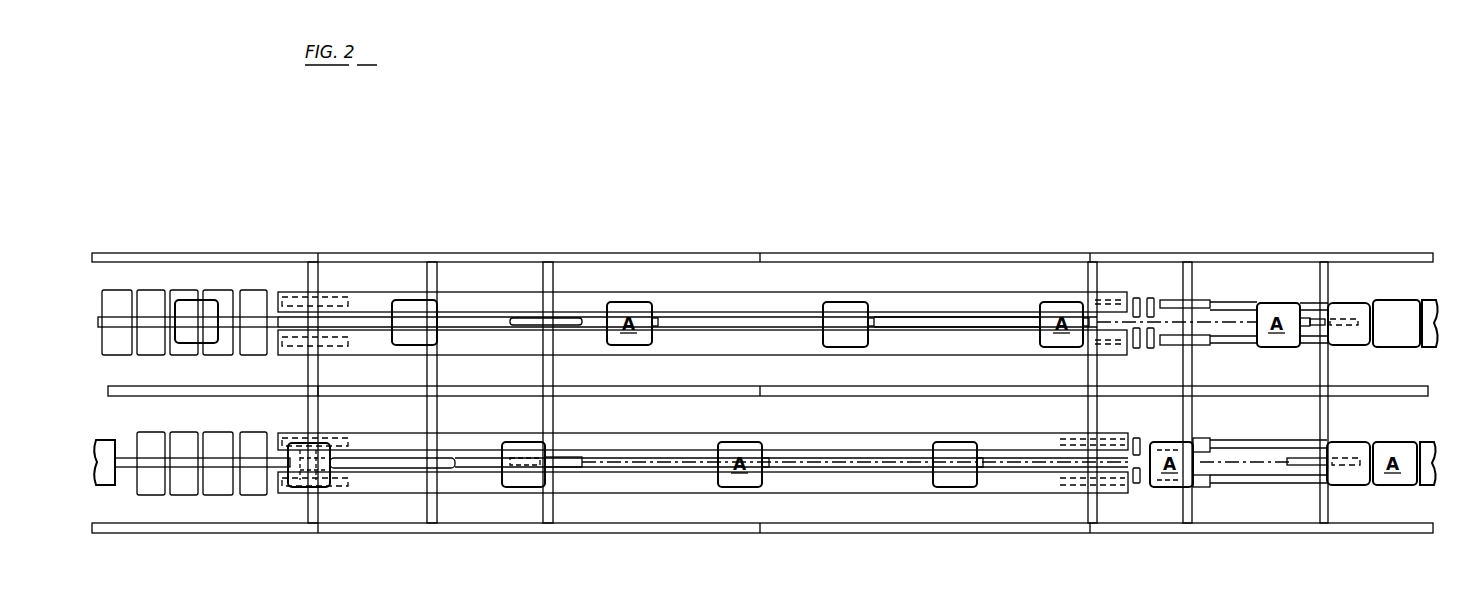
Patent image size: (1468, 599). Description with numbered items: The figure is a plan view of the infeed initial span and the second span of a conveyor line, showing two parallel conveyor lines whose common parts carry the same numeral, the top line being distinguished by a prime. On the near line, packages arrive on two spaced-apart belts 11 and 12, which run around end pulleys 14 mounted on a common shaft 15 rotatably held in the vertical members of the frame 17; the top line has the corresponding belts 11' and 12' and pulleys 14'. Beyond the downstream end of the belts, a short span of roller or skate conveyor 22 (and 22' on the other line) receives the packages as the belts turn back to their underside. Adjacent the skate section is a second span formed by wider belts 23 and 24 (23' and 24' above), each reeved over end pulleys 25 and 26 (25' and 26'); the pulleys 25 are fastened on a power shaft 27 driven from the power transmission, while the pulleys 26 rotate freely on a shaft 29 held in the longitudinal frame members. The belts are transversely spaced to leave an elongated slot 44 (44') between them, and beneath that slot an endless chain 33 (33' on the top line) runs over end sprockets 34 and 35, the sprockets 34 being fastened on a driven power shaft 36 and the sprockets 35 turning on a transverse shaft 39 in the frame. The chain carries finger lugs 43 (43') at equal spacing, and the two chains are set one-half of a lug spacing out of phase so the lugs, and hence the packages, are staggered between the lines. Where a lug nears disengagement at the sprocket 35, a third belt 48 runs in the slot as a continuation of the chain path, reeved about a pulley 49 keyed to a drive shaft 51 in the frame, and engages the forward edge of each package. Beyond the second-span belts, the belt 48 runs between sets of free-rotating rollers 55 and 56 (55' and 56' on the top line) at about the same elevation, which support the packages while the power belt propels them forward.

The belt 11 is at (1263, 438).
The belt 11' is at (1304, 297).
The belt 12 is at (1268, 487).
The belt 12' is at (1319, 346).
The end pulleys 14 is at (1211, 463).
The end pulleys 14' is at (1208, 322).
The common shaft 15 is at (1183, 414).
The frame 17 is at (965, 388).
The roller or skate conveyor 22 is at (1141, 463).
The roller or skate conveyor 22' is at (1155, 325).
The belt 23 is at (703, 428).
The belt 23' is at (702, 287).
The belt 24 is at (703, 496).
The belt 24' is at (702, 356).
The end pulleys 25 is at (1081, 463).
The end pulleys 25' is at (1118, 282).
The end pulleys 26 is at (325, 463).
The end pulleys 26' is at (324, 304).
The power shaft 27 is at (1088, 270).
The shaft 29 is at (318, 372).
The endless chain 33 is at (791, 436).
The endless chain 33' is at (767, 294).
The end sprockets 34 is at (1325, 445).
The end sprockets 35 is at (578, 457).
The power shaft 36 is at (1328, 414).
The transverse shaft 39 is at (553, 372).
The finger lugs 43 is at (771, 436).
The finger lugs 43' is at (873, 342).
The elongated slot 44 is at (945, 446).
The elongated slot 44' is at (957, 294).
The third belt 48 is at (133, 458).
The pulley 49 is at (448, 470).
The drive shaft 51 is at (437, 372).
The rollers 55 is at (202, 476).
The rollers 55' is at (188, 336).
The rollers 56 is at (264, 446).
The rollers 56' is at (196, 302).